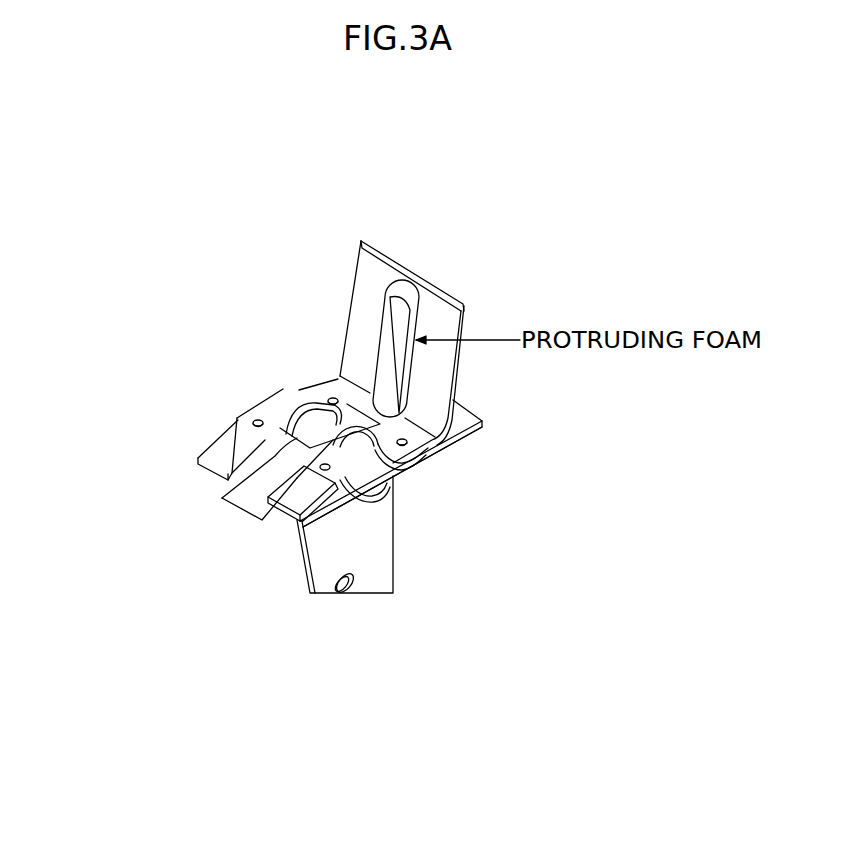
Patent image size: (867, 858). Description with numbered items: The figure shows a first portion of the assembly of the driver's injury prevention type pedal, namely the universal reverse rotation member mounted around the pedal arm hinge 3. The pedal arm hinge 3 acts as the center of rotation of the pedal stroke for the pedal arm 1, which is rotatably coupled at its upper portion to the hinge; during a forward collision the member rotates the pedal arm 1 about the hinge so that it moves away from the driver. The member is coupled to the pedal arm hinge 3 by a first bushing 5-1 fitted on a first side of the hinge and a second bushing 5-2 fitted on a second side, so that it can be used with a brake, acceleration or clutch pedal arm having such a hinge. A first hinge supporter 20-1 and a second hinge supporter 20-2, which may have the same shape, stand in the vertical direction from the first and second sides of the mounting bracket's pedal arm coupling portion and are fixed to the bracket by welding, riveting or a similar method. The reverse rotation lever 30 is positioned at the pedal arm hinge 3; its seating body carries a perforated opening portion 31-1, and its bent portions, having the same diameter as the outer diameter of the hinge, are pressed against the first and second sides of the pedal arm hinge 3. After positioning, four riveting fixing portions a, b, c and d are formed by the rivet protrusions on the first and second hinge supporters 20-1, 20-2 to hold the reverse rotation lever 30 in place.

The reverse rotation lever 30 is at (435, 315).
The pedal arm hinge 3 is at (362, 490).
The perforated opening portion 31-1 is at (407, 465).
The pedal arm 1 is at (368, 563).
The first hinge supporter 20-1 is at (225, 458).
The second hinge supporter 20-2 is at (281, 498).
The riveting fixing portion c is at (320, 433).
The first bushing 5-1 is at (292, 398).
The second bushing 5-2 is at (380, 467).
The riveting fixing portion a is at (254, 421).
The riveting fixing portion b is at (330, 394).
The riveting fixing portion d is at (402, 437).